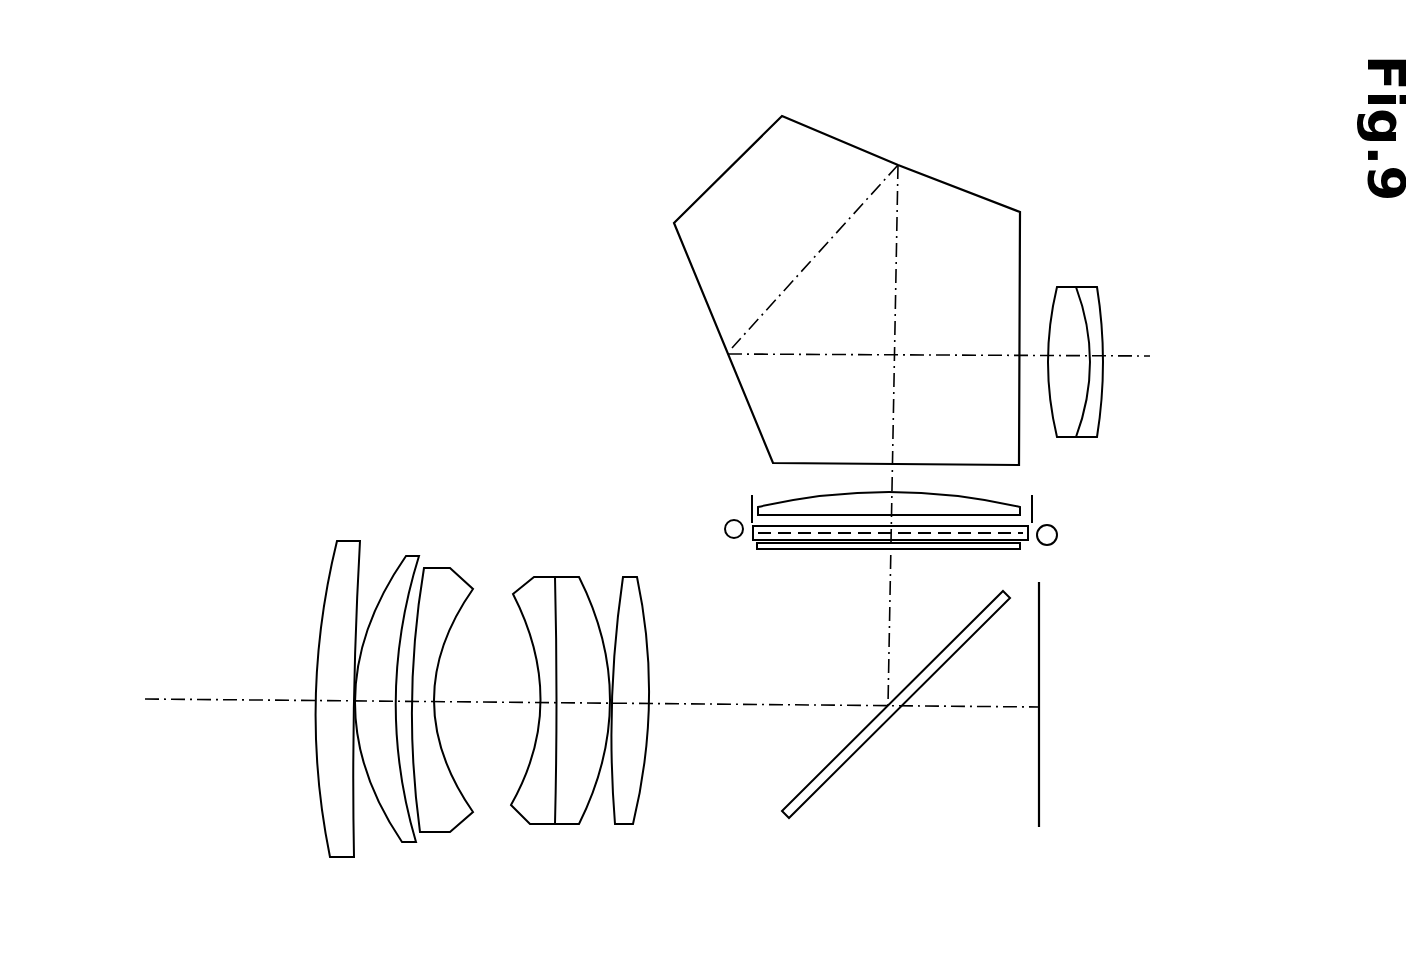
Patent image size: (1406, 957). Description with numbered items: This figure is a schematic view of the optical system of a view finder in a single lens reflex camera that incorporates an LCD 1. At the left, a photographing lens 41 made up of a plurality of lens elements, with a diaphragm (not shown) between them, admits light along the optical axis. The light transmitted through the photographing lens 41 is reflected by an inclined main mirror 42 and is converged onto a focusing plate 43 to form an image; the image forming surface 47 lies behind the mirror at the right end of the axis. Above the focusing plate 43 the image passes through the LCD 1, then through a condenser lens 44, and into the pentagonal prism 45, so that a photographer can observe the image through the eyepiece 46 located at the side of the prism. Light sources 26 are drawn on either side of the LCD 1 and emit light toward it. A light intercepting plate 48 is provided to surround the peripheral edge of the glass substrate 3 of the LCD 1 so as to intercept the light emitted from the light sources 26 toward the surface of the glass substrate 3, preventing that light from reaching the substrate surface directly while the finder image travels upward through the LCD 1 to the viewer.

The LCD 1 is at (1028, 548).
The glass substrate 3 is at (963, 532).
The light sources 26 is at (728, 537).
The photographing lens 41 is at (456, 540).
The main mirror 42 is at (843, 762).
The focusing plate 43 is at (815, 550).
The condenser lens 44 is at (797, 502).
The pentagonal prism 45 is at (823, 132).
The eyepiece 46 is at (1102, 302).
The image forming surface 47 is at (1040, 733).
The light intercepting plate 48 is at (752, 495).